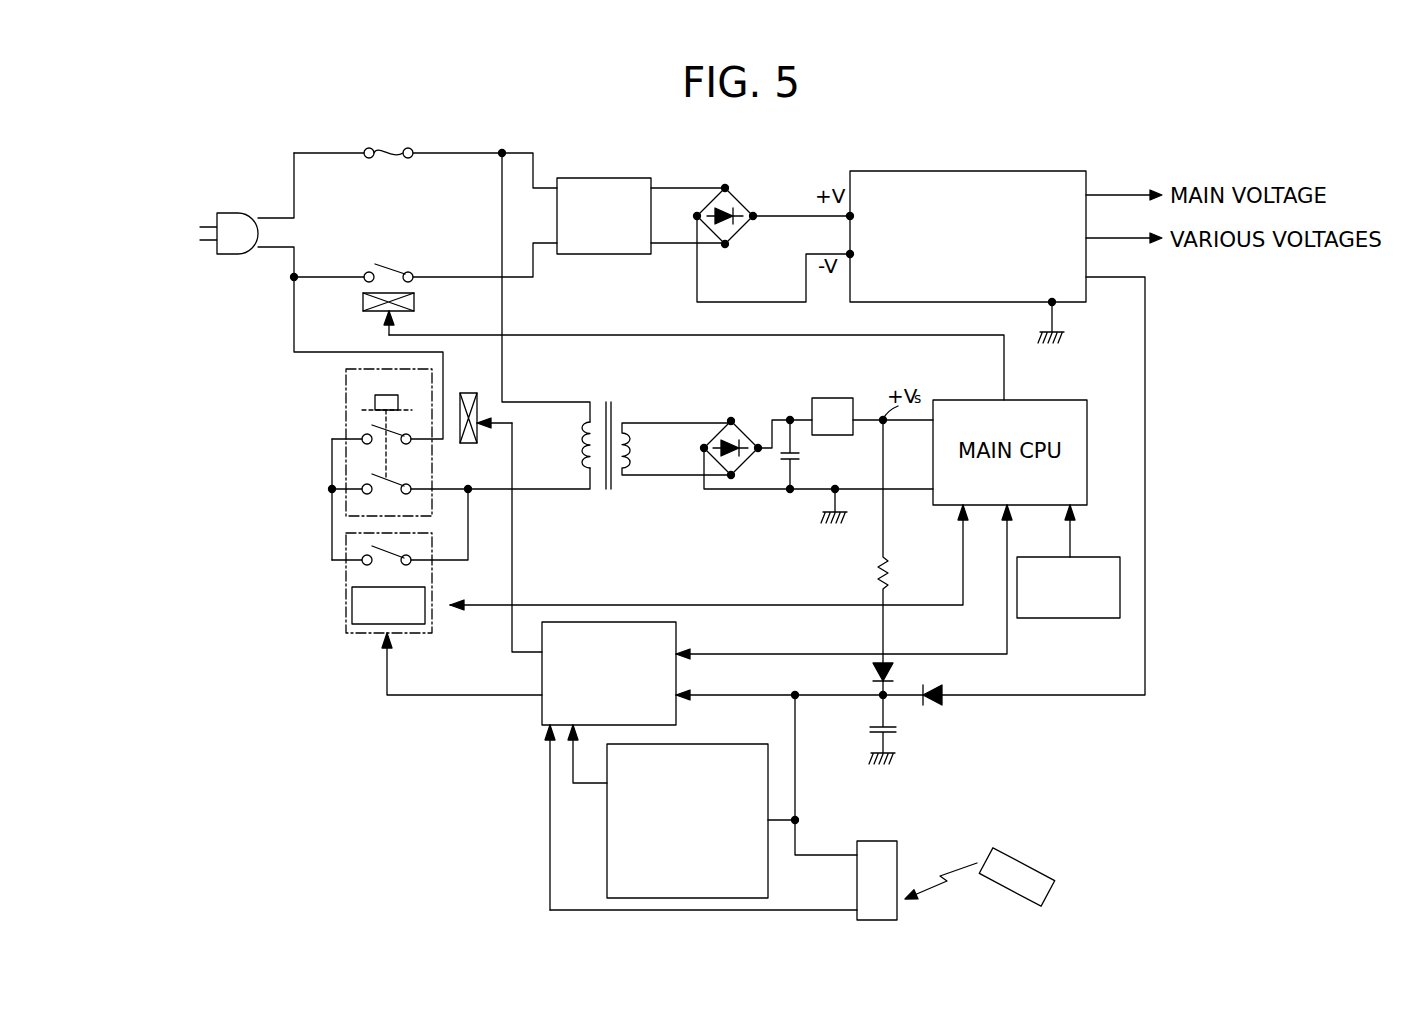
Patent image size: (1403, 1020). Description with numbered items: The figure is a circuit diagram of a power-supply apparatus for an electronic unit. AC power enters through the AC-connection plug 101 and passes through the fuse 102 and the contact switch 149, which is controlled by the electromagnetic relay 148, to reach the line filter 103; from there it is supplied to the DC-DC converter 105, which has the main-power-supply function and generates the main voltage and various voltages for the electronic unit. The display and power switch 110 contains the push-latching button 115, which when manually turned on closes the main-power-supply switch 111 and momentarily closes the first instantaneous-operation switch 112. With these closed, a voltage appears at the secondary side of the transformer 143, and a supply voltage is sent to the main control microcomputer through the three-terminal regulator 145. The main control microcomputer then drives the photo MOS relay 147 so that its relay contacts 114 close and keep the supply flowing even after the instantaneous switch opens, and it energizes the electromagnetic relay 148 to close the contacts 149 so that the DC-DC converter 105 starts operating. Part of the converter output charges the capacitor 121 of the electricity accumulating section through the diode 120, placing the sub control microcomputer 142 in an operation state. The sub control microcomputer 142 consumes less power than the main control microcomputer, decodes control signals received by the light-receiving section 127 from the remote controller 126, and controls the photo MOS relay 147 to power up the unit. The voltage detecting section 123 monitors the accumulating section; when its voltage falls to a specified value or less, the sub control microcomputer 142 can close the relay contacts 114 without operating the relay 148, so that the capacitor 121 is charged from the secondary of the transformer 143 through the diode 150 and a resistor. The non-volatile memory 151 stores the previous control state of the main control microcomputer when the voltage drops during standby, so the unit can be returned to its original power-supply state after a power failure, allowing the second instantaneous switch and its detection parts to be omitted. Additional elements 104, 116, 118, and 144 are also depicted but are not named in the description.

The AC-connection plug 101 is at (230, 213).
The fuse 102 is at (395, 148).
The line filter 103 is at (590, 178).
The rectifier bridge 104 is at (740, 235).
The DC-DC converter 105 is at (950, 171).
The display and power switch 110 is at (334, 395).
The main-power-supply switch 111 is at (372, 428).
The first instantaneous-operation switch 112 is at (372, 476).
The relay contacts 114 is at (380, 567).
The push-latching button 115 is at (381, 395).
The relay coil 116 is at (468, 393).
The switch block 118 is at (336, 642).
The diode 120 is at (945, 692).
The capacitor 121 is at (898, 731).
The voltage detecting section 123 is at (755, 744).
The remote controller 126 is at (1034, 860).
The light-receiving section 127 is at (880, 841).
The sub control microcomputer 142 is at (676, 633).
The transformer 143 is at (614, 413).
The rectifier bridge 144 is at (745, 430).
The three-terminal regulator 145 is at (832, 398).
The photo MOS relay 147 is at (413, 624).
The electromagnetic relay 148 is at (414, 300).
The contact switch 149 is at (394, 268).
The diode 150 is at (872, 673).
The non-volatile memory 151 is at (1078, 618).